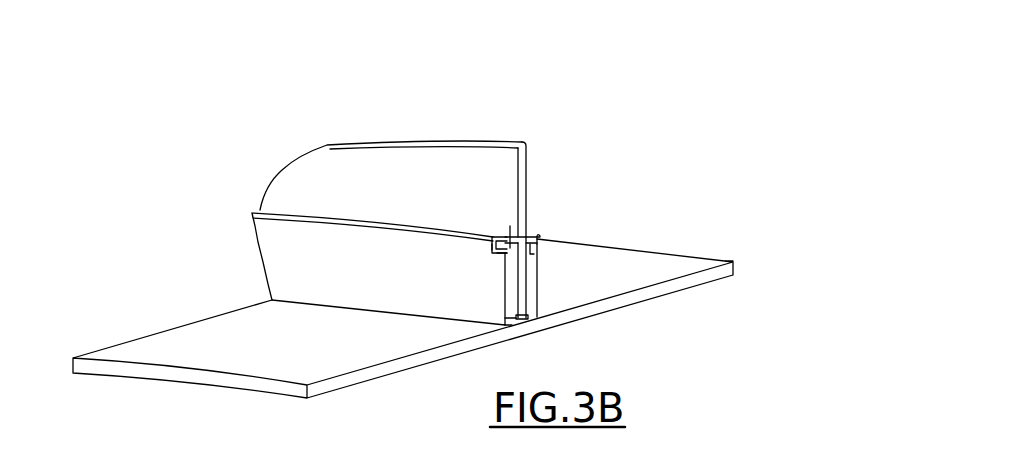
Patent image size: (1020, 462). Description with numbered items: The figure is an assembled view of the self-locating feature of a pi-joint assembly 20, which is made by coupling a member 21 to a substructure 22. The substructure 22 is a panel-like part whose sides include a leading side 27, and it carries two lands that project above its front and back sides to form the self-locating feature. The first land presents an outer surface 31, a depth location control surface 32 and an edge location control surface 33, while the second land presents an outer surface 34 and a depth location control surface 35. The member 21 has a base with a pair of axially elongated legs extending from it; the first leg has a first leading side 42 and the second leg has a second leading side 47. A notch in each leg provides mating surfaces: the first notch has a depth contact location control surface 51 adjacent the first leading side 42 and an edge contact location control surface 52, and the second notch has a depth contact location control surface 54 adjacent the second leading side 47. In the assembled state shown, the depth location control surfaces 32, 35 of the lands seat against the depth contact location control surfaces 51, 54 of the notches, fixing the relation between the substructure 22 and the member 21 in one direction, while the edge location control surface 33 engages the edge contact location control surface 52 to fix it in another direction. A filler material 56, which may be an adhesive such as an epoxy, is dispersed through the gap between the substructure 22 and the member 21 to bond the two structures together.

The pi-joint assembly 20 is at (236, 208).
The member 21 is at (162, 343).
The substructure 22 is at (396, 158).
The leading side 27 is at (525, 160).
The outer surface 31 is at (510, 228).
The depth location control surface 32 is at (508, 254).
The edge location control surface 33 is at (492, 238).
The outer surface 34 is at (528, 236).
The depth location control surface 35 is at (533, 252).
The first leading side 42 is at (512, 316).
The second leading side 47 is at (532, 300).
The depth contact location control surface 51 is at (503, 255).
The edge contact location control surface 52 is at (490, 250).
The depth contact location control surface 54 is at (538, 241).
The filler material 56 is at (524, 321).